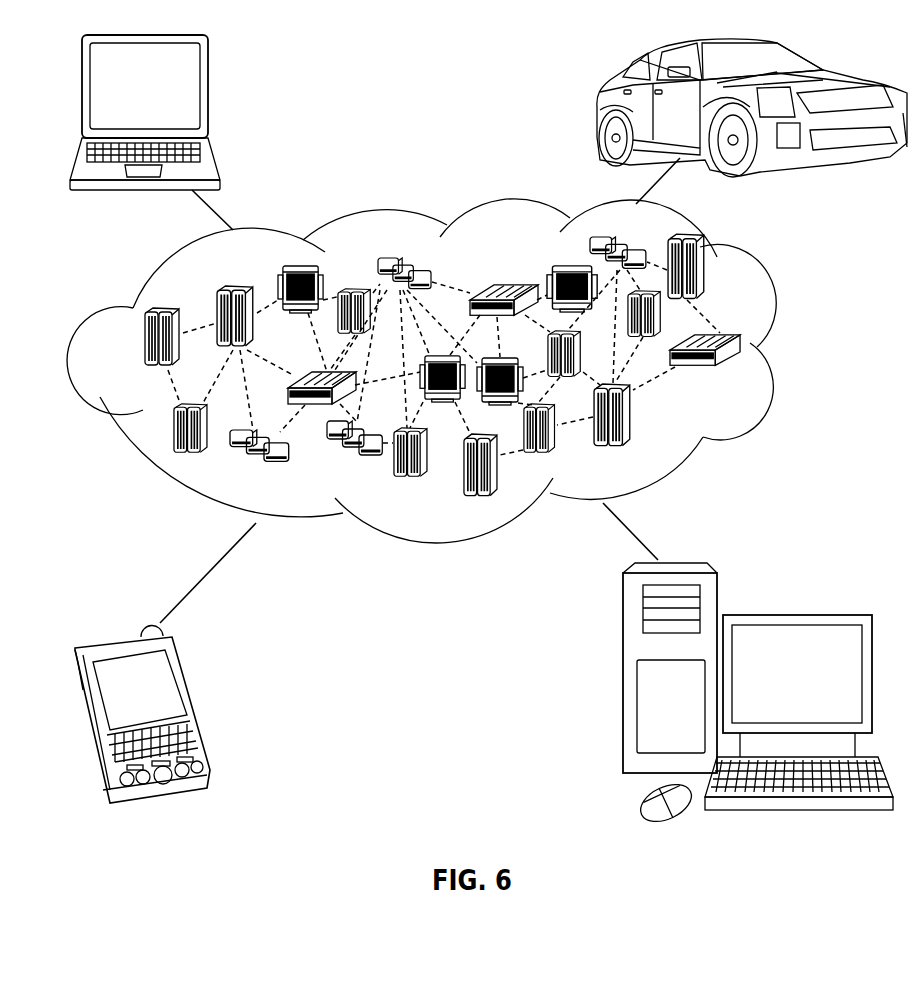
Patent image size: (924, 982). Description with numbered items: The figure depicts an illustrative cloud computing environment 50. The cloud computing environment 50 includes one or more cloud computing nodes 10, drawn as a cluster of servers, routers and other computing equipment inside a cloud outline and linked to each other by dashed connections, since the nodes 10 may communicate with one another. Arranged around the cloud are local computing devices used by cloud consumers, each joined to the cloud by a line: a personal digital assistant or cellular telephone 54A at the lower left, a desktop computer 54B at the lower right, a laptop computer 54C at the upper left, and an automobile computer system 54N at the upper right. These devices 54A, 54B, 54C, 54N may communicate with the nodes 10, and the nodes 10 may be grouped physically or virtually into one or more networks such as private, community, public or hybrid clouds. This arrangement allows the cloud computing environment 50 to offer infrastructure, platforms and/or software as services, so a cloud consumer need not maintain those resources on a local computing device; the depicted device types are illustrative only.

The cloud computing nodes 10 is at (748, 376).
The cloud computing environment 50 is at (797, 341).
The personal digital assistant (PDA) or cellular telephone 54A is at (197, 703).
The desktop computer 54B is at (795, 613).
The laptop computer 54C is at (207, 96).
The automobile computer system 54N is at (602, 108).